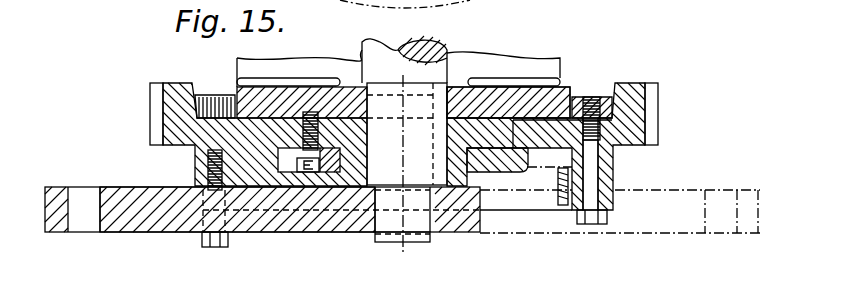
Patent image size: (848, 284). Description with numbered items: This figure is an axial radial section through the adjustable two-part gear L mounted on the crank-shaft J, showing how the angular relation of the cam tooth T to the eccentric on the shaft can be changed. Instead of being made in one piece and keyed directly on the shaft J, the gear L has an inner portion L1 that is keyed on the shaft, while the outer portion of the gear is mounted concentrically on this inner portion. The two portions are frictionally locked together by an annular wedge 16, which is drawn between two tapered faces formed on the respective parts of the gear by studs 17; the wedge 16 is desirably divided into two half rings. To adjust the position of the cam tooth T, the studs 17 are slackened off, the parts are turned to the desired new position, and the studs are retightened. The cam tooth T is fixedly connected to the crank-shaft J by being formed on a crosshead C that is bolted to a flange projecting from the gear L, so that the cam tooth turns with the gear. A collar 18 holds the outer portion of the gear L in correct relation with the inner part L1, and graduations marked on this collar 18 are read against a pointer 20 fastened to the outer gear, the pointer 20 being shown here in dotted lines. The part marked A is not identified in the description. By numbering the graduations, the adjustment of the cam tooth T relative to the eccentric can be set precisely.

The cam tooth T is at (155, 232).
The crosshead C is at (328, 232).
The gear L is at (150, 121).
The inner portion of the gear L1 is at (483, 108).
The annular member A is at (543, 68).
The shaft J is at (365, 50).
The annular wedge 16 is at (223, 72).
The studs 17 is at (592, 224).
The collar 18 is at (505, 172).
The pointer 20 is at (550, 168).